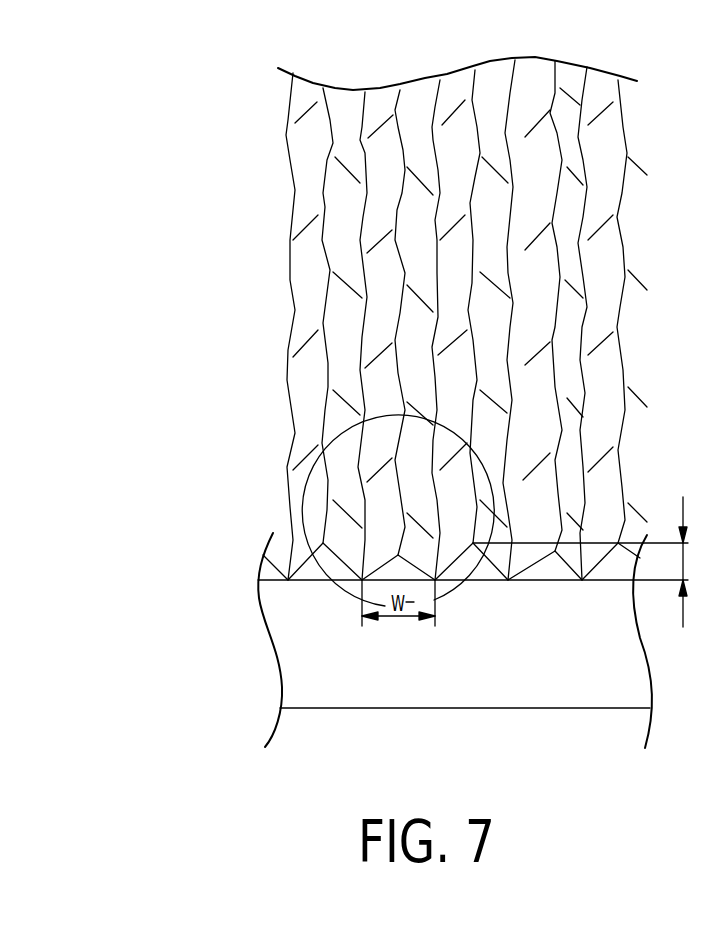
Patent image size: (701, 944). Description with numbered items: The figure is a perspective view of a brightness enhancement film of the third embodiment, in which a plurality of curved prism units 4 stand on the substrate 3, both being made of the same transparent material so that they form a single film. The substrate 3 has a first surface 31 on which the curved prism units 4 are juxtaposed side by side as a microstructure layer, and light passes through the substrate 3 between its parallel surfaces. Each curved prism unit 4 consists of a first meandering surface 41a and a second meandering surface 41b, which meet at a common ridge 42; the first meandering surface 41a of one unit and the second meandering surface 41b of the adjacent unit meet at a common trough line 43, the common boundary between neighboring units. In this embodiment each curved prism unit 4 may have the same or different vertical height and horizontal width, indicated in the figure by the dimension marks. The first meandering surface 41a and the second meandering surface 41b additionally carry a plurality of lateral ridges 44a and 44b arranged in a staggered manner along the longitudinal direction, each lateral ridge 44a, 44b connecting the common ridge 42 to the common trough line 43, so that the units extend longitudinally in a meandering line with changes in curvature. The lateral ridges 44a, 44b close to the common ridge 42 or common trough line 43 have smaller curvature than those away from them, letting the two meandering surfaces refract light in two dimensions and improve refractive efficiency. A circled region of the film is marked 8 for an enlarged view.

The substrate 3 is at (293, 657).
The first surface 31 is at (307, 581).
The curved prism unit 4 is at (317, 560).
The first meandering surface 41a is at (303, 388).
The second meandering surface 41b is at (340, 415).
The common ridge 42 is at (322, 203).
The common trough line 43 is at (360, 152).
The lateral ridge 44a is at (315, 333).
The lateral ridge 44b is at (345, 283).
The enlarged region shown in FIG. 8 is at (423, 600).